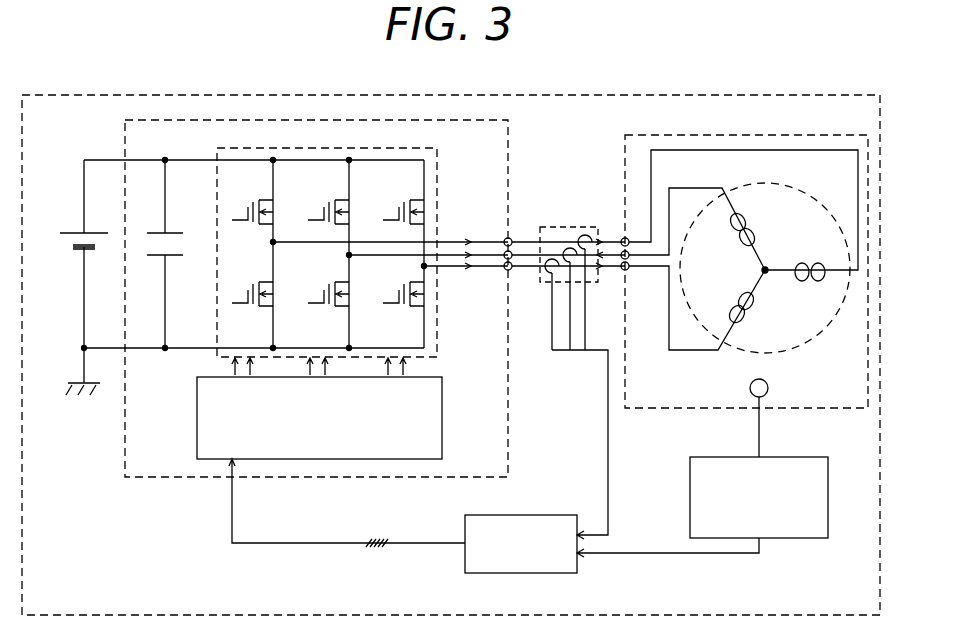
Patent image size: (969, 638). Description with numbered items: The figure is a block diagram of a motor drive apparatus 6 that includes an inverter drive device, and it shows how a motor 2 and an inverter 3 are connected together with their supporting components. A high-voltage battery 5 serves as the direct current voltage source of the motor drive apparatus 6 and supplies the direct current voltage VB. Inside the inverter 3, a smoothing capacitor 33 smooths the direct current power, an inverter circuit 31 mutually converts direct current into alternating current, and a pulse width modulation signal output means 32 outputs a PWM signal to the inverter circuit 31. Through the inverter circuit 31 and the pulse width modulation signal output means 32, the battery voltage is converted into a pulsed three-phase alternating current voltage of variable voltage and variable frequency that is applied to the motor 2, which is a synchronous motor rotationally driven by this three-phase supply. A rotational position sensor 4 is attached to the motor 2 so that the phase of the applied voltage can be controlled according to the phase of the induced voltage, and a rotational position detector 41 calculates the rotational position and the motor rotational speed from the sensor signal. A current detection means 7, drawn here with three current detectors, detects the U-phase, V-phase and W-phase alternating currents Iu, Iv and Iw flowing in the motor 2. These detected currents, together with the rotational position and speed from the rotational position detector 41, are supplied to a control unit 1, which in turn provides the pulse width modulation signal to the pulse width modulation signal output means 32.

The control unit 1 is at (520, 515).
The motor 2 is at (762, 135).
The inverter 3 is at (508, 128).
The rotational position sensor 4 is at (750, 382).
The high-voltage battery 5 is at (74, 233).
The motor drive apparatus 6 is at (805, 95).
The current detection means 7 is at (580, 228).
The inverter circuit 31 is at (437, 153).
The pulse width modulation signal output means 32 is at (442, 410).
The smoothing capacitor 33 is at (158, 233).
The rotational position detector 41 is at (780, 457).